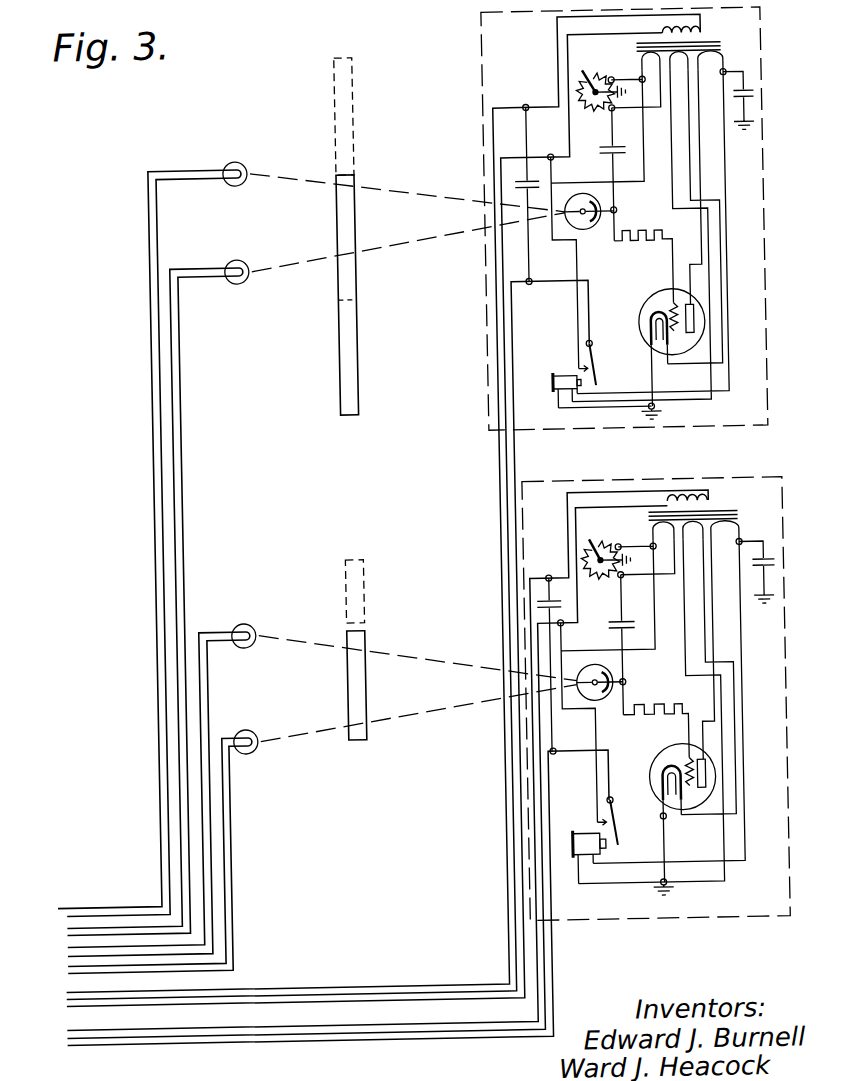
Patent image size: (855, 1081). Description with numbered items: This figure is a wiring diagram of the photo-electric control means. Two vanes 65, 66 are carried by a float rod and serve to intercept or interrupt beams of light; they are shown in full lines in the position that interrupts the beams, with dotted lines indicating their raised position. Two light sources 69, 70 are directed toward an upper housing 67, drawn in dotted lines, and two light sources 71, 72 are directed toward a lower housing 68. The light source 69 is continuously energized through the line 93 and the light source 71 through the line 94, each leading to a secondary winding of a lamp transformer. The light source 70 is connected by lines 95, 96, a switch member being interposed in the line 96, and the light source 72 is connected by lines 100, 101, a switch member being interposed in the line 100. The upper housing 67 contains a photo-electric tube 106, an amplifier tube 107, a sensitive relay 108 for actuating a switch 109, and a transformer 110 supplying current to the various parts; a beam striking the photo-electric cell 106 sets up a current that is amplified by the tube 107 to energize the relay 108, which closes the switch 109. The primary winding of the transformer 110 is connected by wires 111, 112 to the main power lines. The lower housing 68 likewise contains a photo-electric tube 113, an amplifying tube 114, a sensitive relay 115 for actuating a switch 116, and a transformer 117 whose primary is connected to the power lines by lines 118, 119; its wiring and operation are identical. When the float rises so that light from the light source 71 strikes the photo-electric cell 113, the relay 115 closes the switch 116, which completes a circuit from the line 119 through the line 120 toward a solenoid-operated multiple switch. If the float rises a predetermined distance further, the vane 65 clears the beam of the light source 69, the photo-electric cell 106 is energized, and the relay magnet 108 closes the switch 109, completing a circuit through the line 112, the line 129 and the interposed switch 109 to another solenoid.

The vane 65 is at (364, 79).
The vane 66 is at (365, 550).
The housing 67 is at (490, 143).
The housing 68 is at (619, 926).
The light source 69 is at (243, 157).
The light source 70 is at (246, 255).
The light source 71 is at (240, 619).
The light source 72 is at (242, 725).
The line 93 is at (152, 348).
The line 94 is at (198, 680).
The line 95 is at (185, 458).
The line 96 is at (183, 428).
The line 100 is at (232, 926).
The line 101 is at (229, 861).
The photo-electric tube 106 is at (595, 235).
The amplifier tube 107 is at (646, 315).
The sensitive relay 108 is at (563, 378).
The switch 109 is at (598, 375).
The transformer 110 is at (714, 44).
The wire 111 is at (567, 68).
The wire 112 is at (577, 130).
The photo-electric tube 113 is at (608, 706).
The amplifying tube 114 is at (648, 771).
The sensitive relay 115 is at (585, 836).
The switch 116 is at (611, 829).
The transformer 117 is at (710, 508).
The line 118 is at (568, 535).
The line 119 is at (600, 512).
The line 120 is at (558, 756).
The line 129 is at (516, 338).